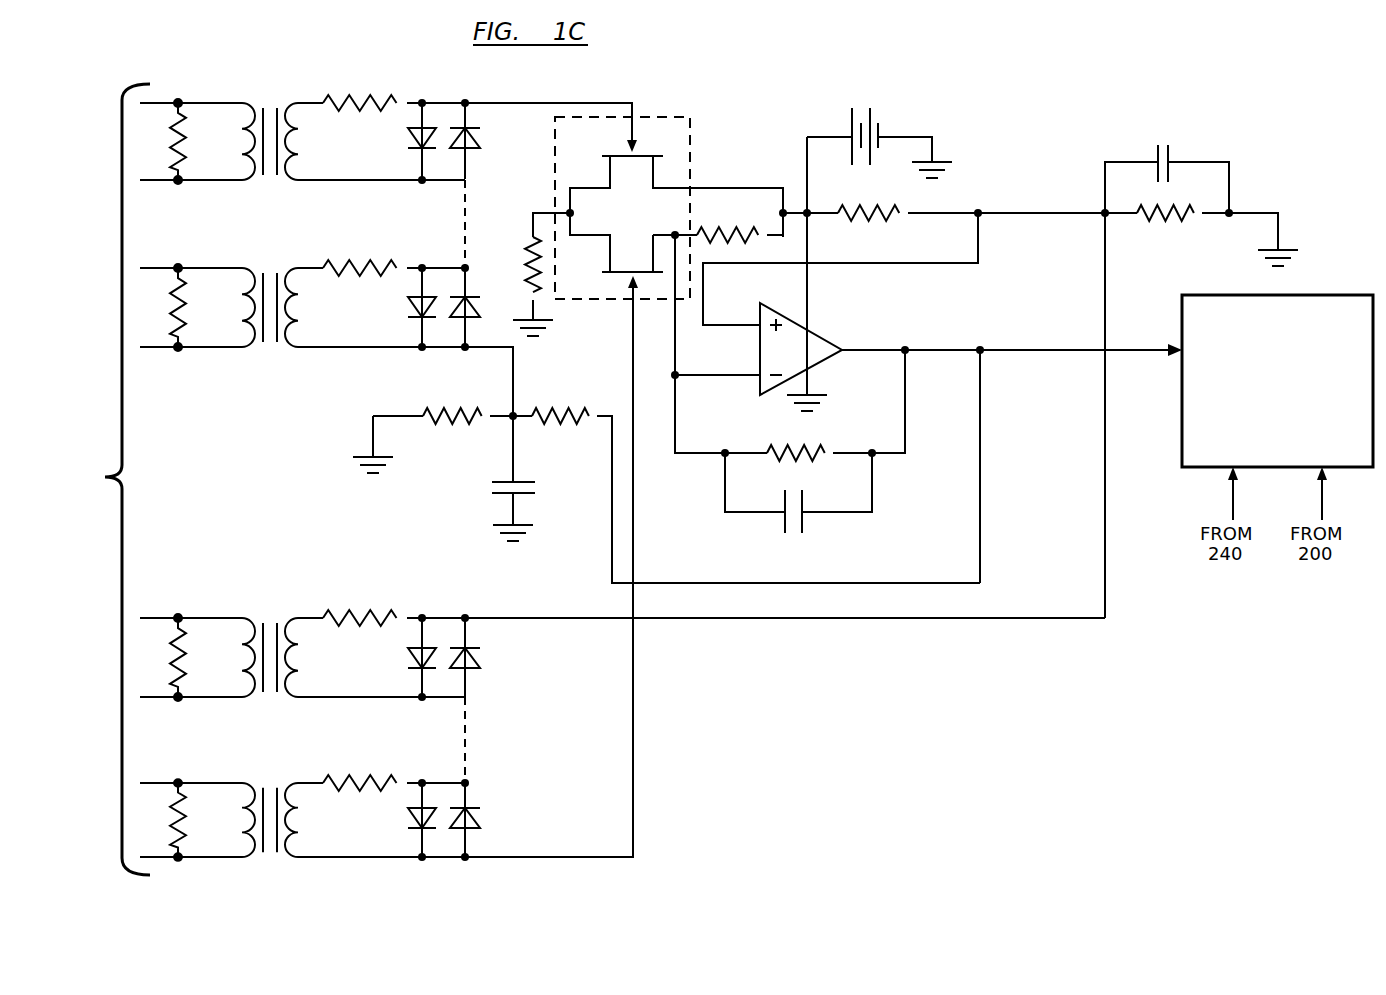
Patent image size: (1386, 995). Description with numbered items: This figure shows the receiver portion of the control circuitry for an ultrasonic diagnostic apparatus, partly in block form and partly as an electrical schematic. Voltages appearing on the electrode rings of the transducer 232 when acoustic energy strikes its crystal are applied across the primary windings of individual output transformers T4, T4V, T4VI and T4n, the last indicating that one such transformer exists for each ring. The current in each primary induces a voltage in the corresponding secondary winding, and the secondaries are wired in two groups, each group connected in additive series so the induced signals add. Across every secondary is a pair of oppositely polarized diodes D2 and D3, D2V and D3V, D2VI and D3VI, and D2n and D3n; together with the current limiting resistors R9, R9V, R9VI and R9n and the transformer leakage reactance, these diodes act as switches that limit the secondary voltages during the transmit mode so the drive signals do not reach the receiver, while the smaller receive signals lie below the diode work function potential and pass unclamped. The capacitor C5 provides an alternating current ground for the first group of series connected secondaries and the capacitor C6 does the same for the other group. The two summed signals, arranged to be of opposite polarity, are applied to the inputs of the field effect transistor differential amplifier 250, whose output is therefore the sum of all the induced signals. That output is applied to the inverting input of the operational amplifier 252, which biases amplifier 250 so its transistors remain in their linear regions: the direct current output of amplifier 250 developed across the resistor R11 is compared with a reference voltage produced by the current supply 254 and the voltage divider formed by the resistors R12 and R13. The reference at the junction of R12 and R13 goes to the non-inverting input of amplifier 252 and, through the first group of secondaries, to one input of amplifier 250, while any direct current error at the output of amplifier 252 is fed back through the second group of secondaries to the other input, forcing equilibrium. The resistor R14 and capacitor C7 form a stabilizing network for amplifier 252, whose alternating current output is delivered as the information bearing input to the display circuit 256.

The transducer 232 is at (102, 479).
The output transformer T4 is at (219, 132).
The current limiting resistor R9 is at (352, 84).
The diode D2 is at (408, 131).
The diode D3 is at (480, 140).
The output transformer T4V is at (219, 295).
The current limiting resistor R9V is at (349, 252).
The diode D2V is at (408, 309).
The diode D3V is at (460, 328).
The output transformer T4VI is at (219, 643).
The current limiting resistor R9VI is at (365, 595).
The diode D2VI is at (408, 661).
The diode D3VI is at (482, 662).
The output transformer T4n is at (219, 807).
The current limiting resistor R9n is at (368, 774).
The diode D2n is at (408, 818).
The diode D3n is at (484, 818).
The capacitor C5 is at (536, 481).
The differential amplifier 250 is at (680, 117).
The resistor R11 is at (753, 227).
The current supply 254 is at (870, 112).
The resistor R12 is at (886, 205).
The operational amplifier 252 is at (809, 362).
The resistor R14 is at (818, 452).
The capacitor C7 is at (802, 520).
The capacitor C6 is at (1165, 147).
The resistor R13 is at (1142, 218).
The display circuit 256 is at (1293, 407).